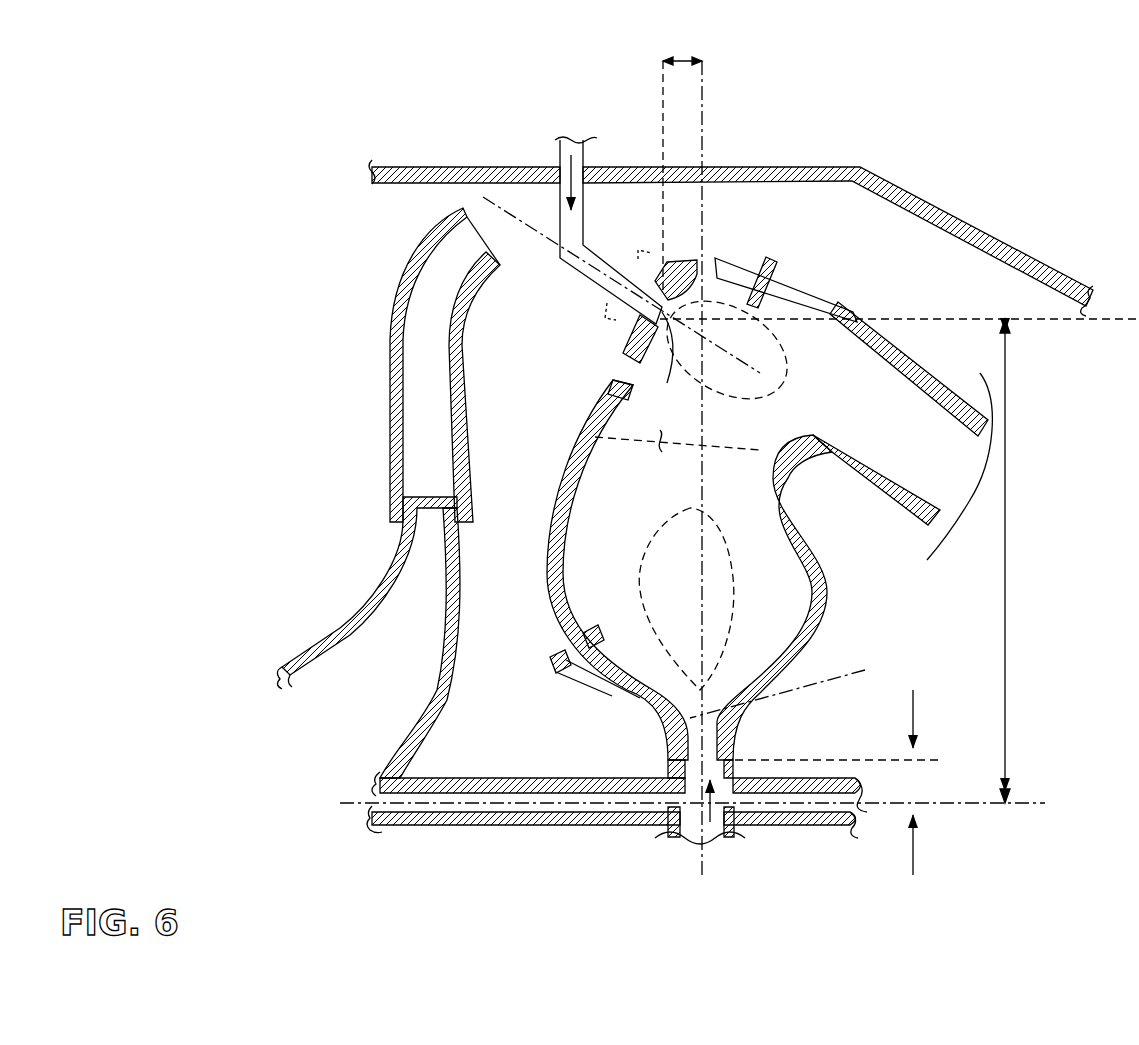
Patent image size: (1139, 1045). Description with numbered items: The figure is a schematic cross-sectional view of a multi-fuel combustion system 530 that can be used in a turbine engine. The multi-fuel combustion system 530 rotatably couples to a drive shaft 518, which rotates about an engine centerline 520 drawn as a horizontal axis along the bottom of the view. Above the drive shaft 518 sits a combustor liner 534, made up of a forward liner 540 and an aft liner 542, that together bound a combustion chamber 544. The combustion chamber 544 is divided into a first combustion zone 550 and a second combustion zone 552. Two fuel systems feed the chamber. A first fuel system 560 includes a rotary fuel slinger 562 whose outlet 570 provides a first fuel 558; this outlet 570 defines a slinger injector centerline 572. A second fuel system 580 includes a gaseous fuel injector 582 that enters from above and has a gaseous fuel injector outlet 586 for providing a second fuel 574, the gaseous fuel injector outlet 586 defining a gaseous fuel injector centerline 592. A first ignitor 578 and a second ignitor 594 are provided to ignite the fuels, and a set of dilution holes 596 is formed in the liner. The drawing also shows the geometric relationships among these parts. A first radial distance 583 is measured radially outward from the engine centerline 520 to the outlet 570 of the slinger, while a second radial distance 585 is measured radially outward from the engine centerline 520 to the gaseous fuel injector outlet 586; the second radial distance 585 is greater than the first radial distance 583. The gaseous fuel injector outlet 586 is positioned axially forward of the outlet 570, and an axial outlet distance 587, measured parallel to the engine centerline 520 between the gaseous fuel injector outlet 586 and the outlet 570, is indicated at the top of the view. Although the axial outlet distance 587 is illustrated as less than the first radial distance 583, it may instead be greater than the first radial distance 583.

The drive shaft 518 is at (468, 833).
The engine centerline 520 is at (1045, 806).
The multi-fuel combustion system 530 is at (518, 616).
The combustor liner 534 is at (834, 547).
The forward liner 540 is at (578, 470).
The aft liner 542 is at (833, 612).
The combustion chamber 544 is at (660, 437).
The first combustion zone 550 is at (720, 483).
The second combustion zone 552 is at (720, 431).
The first fuel 558 is at (712, 808).
The first fuel system 560 is at (652, 769).
The rotary fuel slinger 562 is at (740, 770).
The outlet 570 is at (677, 833).
The slinger injector centerline 572 is at (797, 686).
The second fuel 574 is at (560, 173).
The first ignitor 578 is at (556, 675).
The second fuel system 580 is at (600, 204).
The gaseous fuel injector 582 is at (613, 253).
The first radial distance 583 is at (915, 852).
The second radial distance 585 is at (1007, 596).
The gaseous fuel injector outlet 586 is at (654, 355).
The axial outlet distance 587 is at (690, 56).
The gaseous fuel injector centerline 592 is at (512, 215).
The second ignitor 594 is at (782, 268).
The set of dilution holes 596 is at (700, 270).